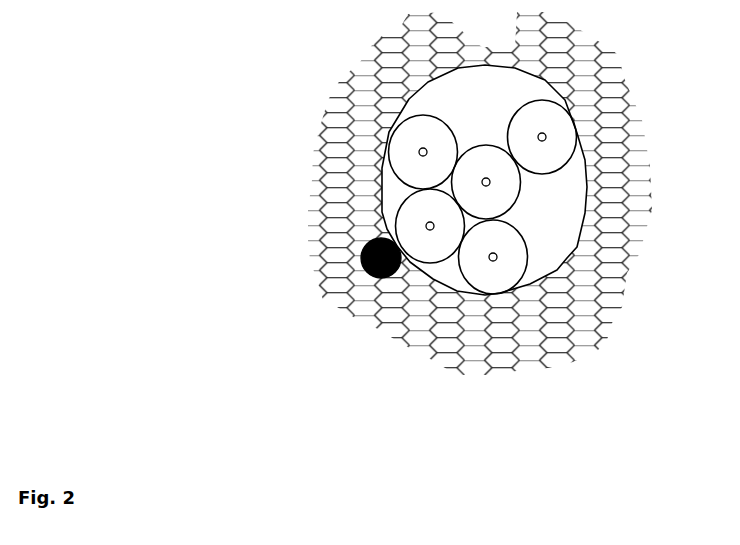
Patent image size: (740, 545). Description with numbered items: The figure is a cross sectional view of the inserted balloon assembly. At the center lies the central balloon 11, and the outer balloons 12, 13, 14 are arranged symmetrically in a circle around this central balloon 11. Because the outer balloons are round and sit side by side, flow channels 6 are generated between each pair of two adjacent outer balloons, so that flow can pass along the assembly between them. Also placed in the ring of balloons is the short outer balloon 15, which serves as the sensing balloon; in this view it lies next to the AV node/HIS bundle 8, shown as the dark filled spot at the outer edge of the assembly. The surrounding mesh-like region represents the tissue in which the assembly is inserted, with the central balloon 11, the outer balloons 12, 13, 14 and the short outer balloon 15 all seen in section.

The flow channel 6 is at (573, 227).
The AV node/HIS bundle 8 is at (352, 278).
The central balloon 11 is at (486, 155).
The outer balloon 12 is at (415, 137).
The outer balloon 13 is at (560, 125).
The outer balloon 14 is at (484, 280).
The short outer balloon 15 is at (425, 256).